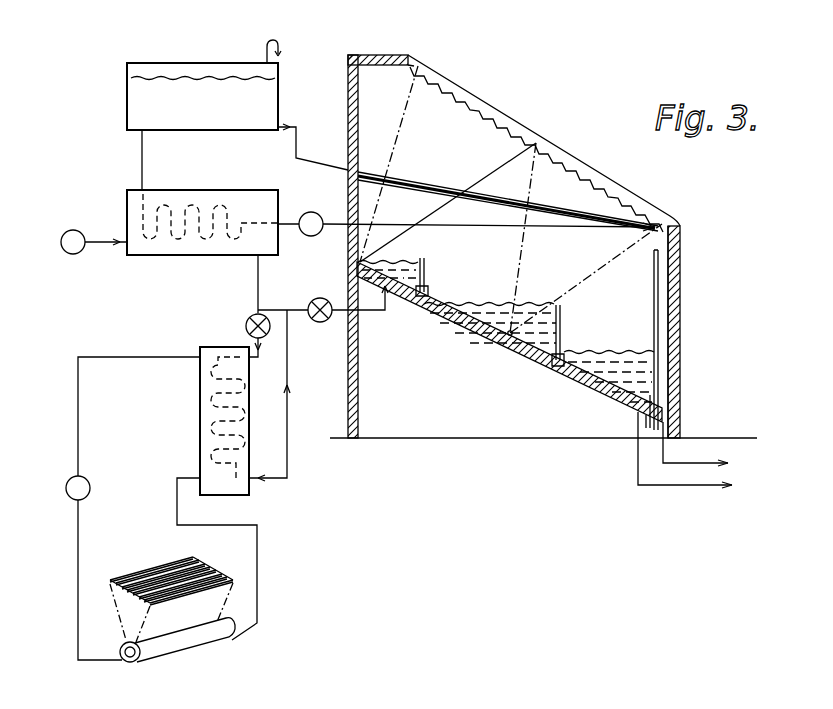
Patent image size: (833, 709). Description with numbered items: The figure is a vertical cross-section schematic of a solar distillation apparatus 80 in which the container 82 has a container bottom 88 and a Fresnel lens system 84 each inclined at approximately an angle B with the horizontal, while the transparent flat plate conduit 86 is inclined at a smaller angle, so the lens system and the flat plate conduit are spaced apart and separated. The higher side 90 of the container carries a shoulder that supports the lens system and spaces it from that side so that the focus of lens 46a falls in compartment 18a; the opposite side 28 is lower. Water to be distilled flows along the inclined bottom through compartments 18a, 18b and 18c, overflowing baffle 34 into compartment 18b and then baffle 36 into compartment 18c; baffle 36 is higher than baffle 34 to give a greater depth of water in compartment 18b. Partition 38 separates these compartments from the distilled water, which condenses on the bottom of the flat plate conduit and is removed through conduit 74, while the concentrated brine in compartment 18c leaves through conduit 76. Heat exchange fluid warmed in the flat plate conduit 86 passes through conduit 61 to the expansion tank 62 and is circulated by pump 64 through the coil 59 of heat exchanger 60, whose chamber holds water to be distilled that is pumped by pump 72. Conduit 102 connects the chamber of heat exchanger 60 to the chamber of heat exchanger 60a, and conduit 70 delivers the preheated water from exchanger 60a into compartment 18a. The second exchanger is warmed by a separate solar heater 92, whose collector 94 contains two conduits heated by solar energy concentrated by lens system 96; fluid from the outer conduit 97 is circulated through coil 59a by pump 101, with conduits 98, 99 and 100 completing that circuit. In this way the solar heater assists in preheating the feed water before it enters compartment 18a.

The compartment 18a is at (410, 262).
The compartment 18b is at (506, 299).
The compartment 18c is at (628, 346).
The side 28 is at (681, 352).
The baffle 34 is at (427, 285).
The baffle 36 is at (561, 332).
The partition 38 is at (653, 280).
The lens 46a is at (514, 118).
The coil 59 is at (186, 205).
The coil 59a is at (220, 349).
The heat exchanger 60 is at (142, 256).
The heat exchanger 60a is at (200, 422).
The conduit 61 is at (308, 158).
The expansion tank 62 is at (282, 92).
The pump 64 is at (318, 212).
The conduit 70 is at (288, 464).
The pump 72 is at (76, 229).
The conduit 74 is at (716, 462).
The conduit 76 is at (710, 488).
The solar distillation apparatus 80 is at (584, 104).
The container 82 is at (686, 299).
The Fresnel lens system 84 is at (625, 170).
The transparent flat plate conduit 86 is at (470, 166).
The container bottom 88 is at (478, 342).
The higher side 90 is at (360, 123).
The solar heater 92 is at (368, 57).
The collector 94 is at (188, 656).
The lens system 96 is at (134, 572).
The outer conduit 97 is at (133, 666).
The conduit 98 is at (130, 357).
The conduit 99 is at (78, 592).
The conduit 100 is at (257, 557).
The pump 101 is at (66, 488).
The conduit 102 is at (258, 283).
The angle B is at (600, 411).